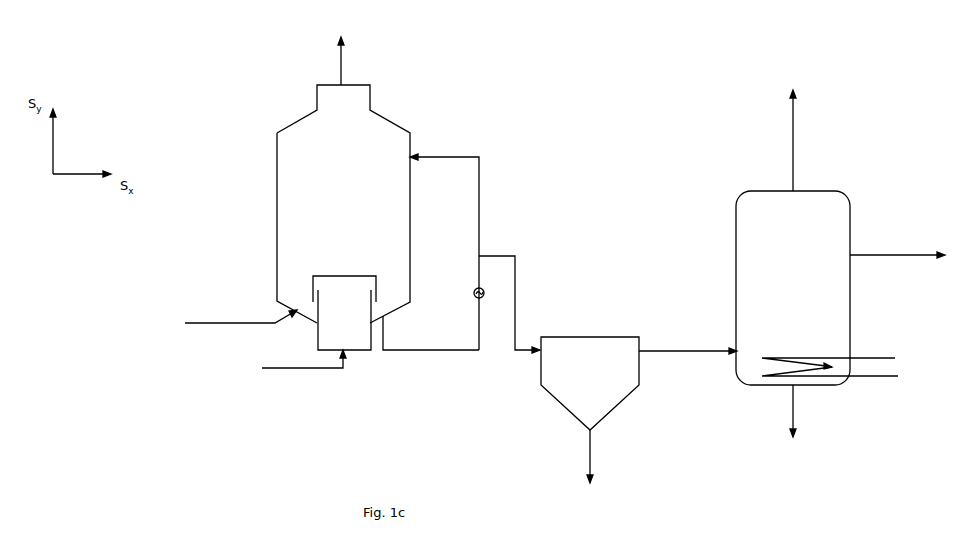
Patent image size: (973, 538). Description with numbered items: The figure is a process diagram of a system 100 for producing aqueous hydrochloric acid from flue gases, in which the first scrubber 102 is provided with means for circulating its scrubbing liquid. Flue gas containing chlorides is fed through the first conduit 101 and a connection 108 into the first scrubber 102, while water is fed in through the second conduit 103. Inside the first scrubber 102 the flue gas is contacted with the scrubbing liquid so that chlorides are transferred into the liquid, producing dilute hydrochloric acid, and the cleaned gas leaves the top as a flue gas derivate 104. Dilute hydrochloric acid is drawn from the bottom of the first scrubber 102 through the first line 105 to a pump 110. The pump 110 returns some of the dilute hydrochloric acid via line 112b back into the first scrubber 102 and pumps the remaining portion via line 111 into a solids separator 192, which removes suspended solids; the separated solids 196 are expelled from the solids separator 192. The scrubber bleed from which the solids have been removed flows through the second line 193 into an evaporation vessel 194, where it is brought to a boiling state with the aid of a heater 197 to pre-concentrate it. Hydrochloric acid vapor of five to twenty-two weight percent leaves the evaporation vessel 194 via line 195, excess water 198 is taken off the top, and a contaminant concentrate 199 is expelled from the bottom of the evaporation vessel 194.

The system 100 is at (235, 82).
The first conduit 101 is at (297, 370).
The first scrubber 102 is at (277, 157).
The second conduit 103 is at (232, 320).
The flue gas derivate 104 is at (345, 78).
The first line 105 is at (420, 353).
The connection 108 is at (315, 326).
The pump 110 is at (474, 296).
The line 111 is at (515, 290).
The line 112b is at (479, 198).
The solids separator 192 is at (580, 337).
The second line 193 is at (680, 350).
The evaporation vessel 194 is at (852, 318).
The line 195 is at (890, 253).
The separated solids 196 is at (592, 455).
The heater 197 is at (880, 380).
The excess water 198 is at (796, 170).
The contaminant concentrate 199 is at (790, 395).